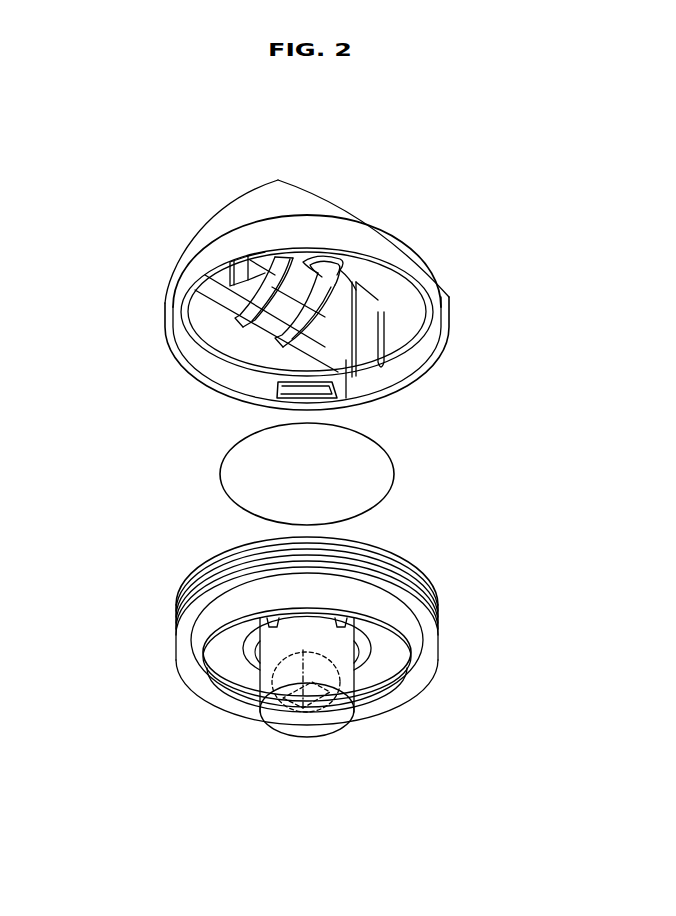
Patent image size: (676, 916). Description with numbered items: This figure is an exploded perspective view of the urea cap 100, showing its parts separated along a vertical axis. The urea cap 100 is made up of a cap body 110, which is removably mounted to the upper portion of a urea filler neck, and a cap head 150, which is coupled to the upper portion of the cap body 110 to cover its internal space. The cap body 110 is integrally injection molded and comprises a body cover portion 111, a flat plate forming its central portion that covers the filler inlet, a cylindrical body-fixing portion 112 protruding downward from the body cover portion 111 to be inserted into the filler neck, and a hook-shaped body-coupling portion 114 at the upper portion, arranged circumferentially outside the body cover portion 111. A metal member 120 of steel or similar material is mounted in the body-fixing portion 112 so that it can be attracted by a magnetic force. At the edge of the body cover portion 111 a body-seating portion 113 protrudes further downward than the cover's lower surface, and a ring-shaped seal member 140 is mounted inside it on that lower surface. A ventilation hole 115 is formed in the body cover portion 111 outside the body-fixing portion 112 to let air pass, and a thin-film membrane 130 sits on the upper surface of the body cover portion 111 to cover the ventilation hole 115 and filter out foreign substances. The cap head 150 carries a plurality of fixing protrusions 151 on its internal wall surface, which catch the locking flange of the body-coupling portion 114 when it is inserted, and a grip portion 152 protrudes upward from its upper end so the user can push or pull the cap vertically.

The urea cap 100 is at (103, 195).
The cap body 110 is at (437, 576).
The body cover portion 111 is at (376, 641).
The body-fixing portion 112 is at (332, 714).
The body-seating portion 113 is at (184, 656).
The body-coupling portion 114 is at (192, 580).
The ventilation hole 115 is at (243, 648).
The metal member 120 is at (291, 711).
The membrane 130 is at (399, 457).
The seal member 140 is at (406, 682).
The cap head 150 is at (443, 223).
The fixing protrusions 151 is at (273, 384).
The grip portion 152 is at (279, 178).